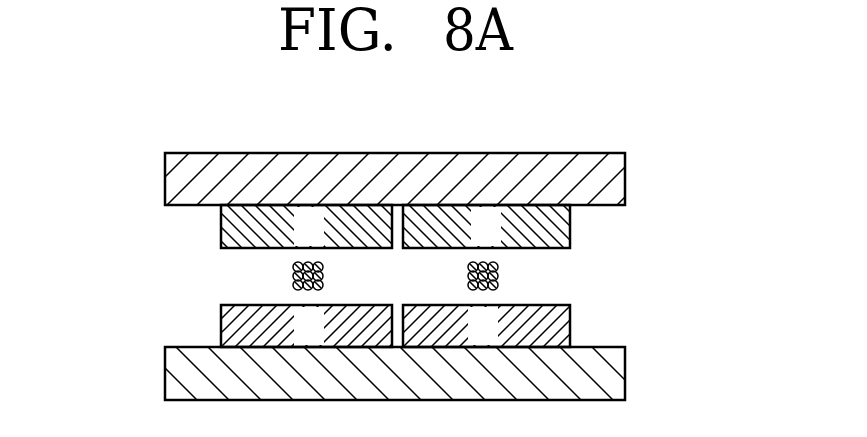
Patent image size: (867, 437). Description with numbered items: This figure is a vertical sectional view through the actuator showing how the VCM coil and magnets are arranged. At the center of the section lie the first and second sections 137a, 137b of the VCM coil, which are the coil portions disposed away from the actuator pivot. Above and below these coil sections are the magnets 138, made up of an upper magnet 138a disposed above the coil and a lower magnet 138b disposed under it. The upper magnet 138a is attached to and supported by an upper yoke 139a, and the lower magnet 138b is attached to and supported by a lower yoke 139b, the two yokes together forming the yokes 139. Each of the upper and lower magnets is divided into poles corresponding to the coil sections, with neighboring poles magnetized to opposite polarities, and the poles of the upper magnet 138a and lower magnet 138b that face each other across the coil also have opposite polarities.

The first section of the VCM coil 137a is at (500, 276).
The second section of the VCM coil 137b is at (292, 272).
The magnets 138 is at (93, 230).
The upper magnet 138a is at (221, 226).
The lower magnet 138b is at (221, 318).
The yokes 139 is at (740, 182).
The upper yoke 139a is at (625, 183).
The lower yoke 139b is at (625, 375).